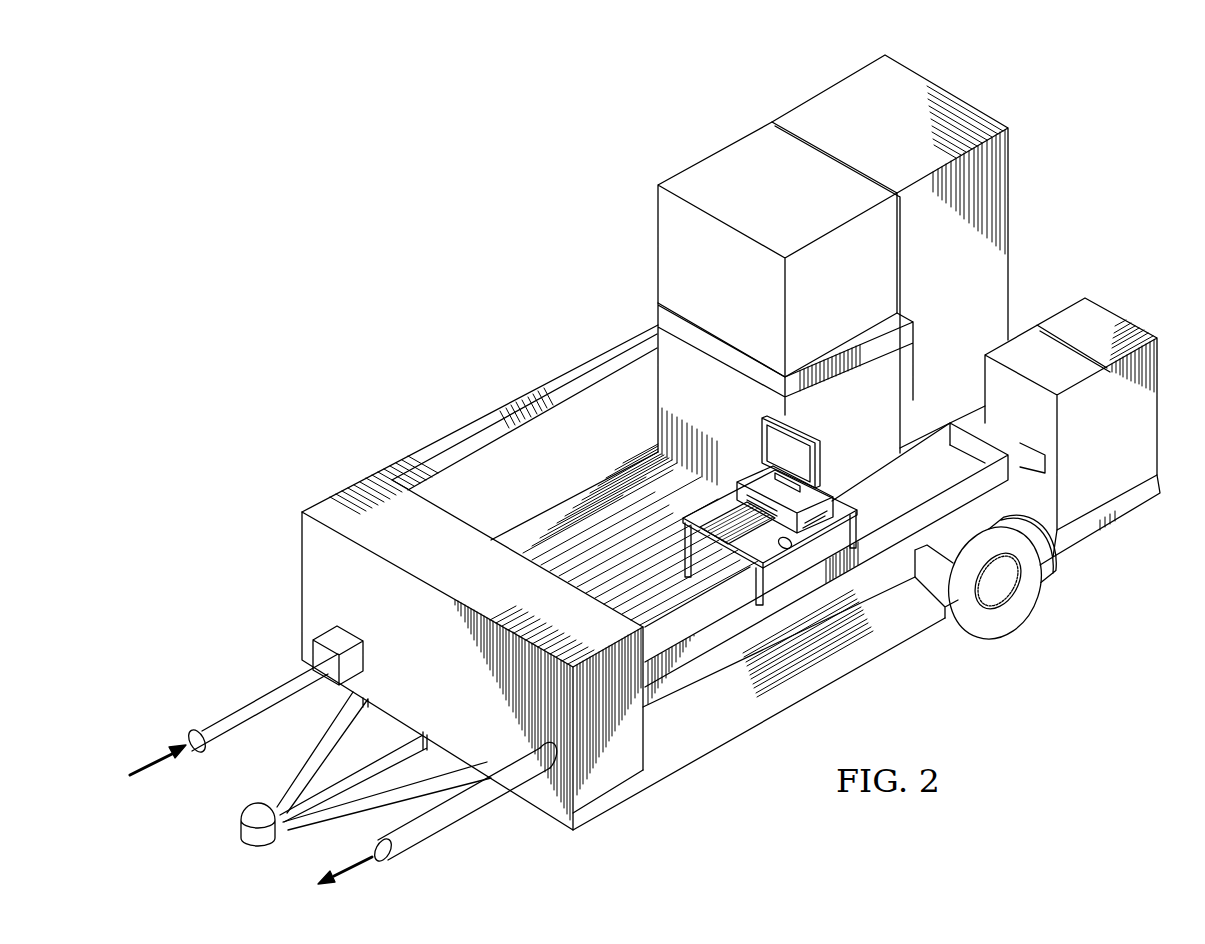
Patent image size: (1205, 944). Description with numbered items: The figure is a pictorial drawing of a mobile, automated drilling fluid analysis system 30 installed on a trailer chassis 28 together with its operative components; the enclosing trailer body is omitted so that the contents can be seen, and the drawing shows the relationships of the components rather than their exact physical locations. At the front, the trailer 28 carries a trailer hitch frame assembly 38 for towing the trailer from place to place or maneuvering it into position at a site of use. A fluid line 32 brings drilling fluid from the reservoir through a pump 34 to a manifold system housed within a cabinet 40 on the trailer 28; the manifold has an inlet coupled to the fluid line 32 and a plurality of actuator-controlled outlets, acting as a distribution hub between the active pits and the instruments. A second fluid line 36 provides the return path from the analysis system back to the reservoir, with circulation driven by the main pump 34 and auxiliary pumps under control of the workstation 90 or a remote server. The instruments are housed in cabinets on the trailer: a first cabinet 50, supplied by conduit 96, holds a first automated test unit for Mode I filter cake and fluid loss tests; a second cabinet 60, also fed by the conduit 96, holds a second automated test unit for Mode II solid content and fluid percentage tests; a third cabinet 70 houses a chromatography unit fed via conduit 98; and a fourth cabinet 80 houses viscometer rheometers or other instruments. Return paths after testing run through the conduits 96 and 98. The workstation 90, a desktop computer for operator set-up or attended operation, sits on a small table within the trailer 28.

The trailer chassis 28 is at (880, 653).
The mobile automated drilling fluid analysis system 30 is at (401, 199).
The fluid line 32 is at (240, 696).
The pump 34 is at (340, 630).
The fluid line 36 is at (450, 823).
The trailer hitch frame assembly 38 is at (300, 772).
The cabinet 40 is at (302, 580).
The first cabinet 50 is at (727, 156).
The second cabinet 60 is at (660, 398).
The third cabinet 70 is at (832, 92).
The fourth cabinet 80 is at (1090, 312).
The workstation 90 is at (823, 470).
The conduit 96 is at (462, 426).
The conduit 98 is at (690, 648).